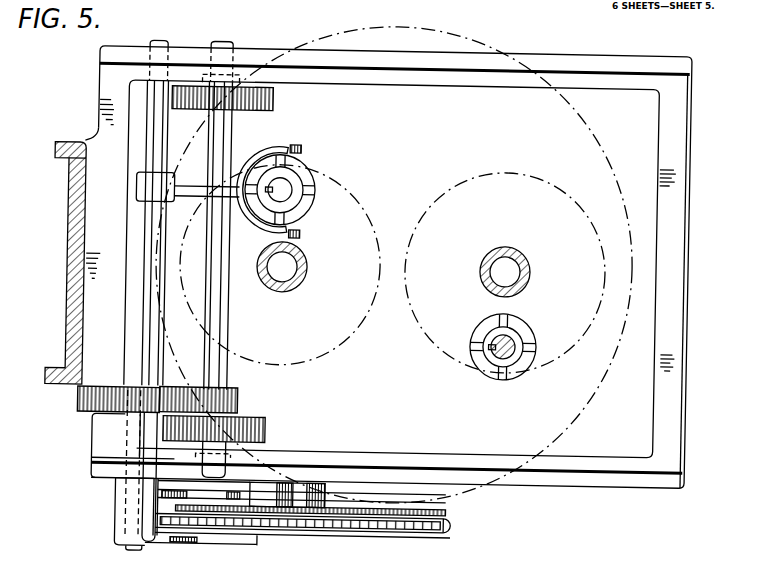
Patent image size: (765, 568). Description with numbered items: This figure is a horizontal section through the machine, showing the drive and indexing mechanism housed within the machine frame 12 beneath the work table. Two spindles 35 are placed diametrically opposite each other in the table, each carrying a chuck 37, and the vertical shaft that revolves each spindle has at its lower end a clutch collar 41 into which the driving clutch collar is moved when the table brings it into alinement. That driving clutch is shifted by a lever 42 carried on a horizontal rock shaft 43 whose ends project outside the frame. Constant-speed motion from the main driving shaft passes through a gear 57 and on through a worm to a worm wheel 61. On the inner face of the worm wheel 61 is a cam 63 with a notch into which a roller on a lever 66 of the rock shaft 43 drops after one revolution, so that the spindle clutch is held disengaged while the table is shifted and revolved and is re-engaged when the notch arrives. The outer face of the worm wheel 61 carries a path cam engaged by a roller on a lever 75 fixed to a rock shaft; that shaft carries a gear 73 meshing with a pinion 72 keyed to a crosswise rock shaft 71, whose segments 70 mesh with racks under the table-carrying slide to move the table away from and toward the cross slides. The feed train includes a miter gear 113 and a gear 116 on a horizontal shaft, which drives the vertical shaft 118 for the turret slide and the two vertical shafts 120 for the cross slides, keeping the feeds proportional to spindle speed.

The machine frame 12 is at (384, 303).
The miter gear 113 is at (608, 147).
The chuck 37 is at (362, 203).
The spindles 35 is at (407, 269).
The clutch collar 41 is at (291, 184).
The lever 42 is at (272, 154).
The rock shaft 43 is at (154, 338).
The rock shaft 71 is at (223, 336).
The segments 70 is at (272, 106).
The pinion 72 is at (240, 405).
The gear 73 is at (80, 408).
The lever 66 is at (261, 500).
The cam 63 is at (452, 510).
The worm wheel 61 is at (455, 531).
The lever 75 is at (247, 546).
The gear 57 is at (300, 529).
The vertical shaft 118 is at (295, 523).
The gear 116 is at (496, 543).
The vertical shafts 120 is at (350, 523).